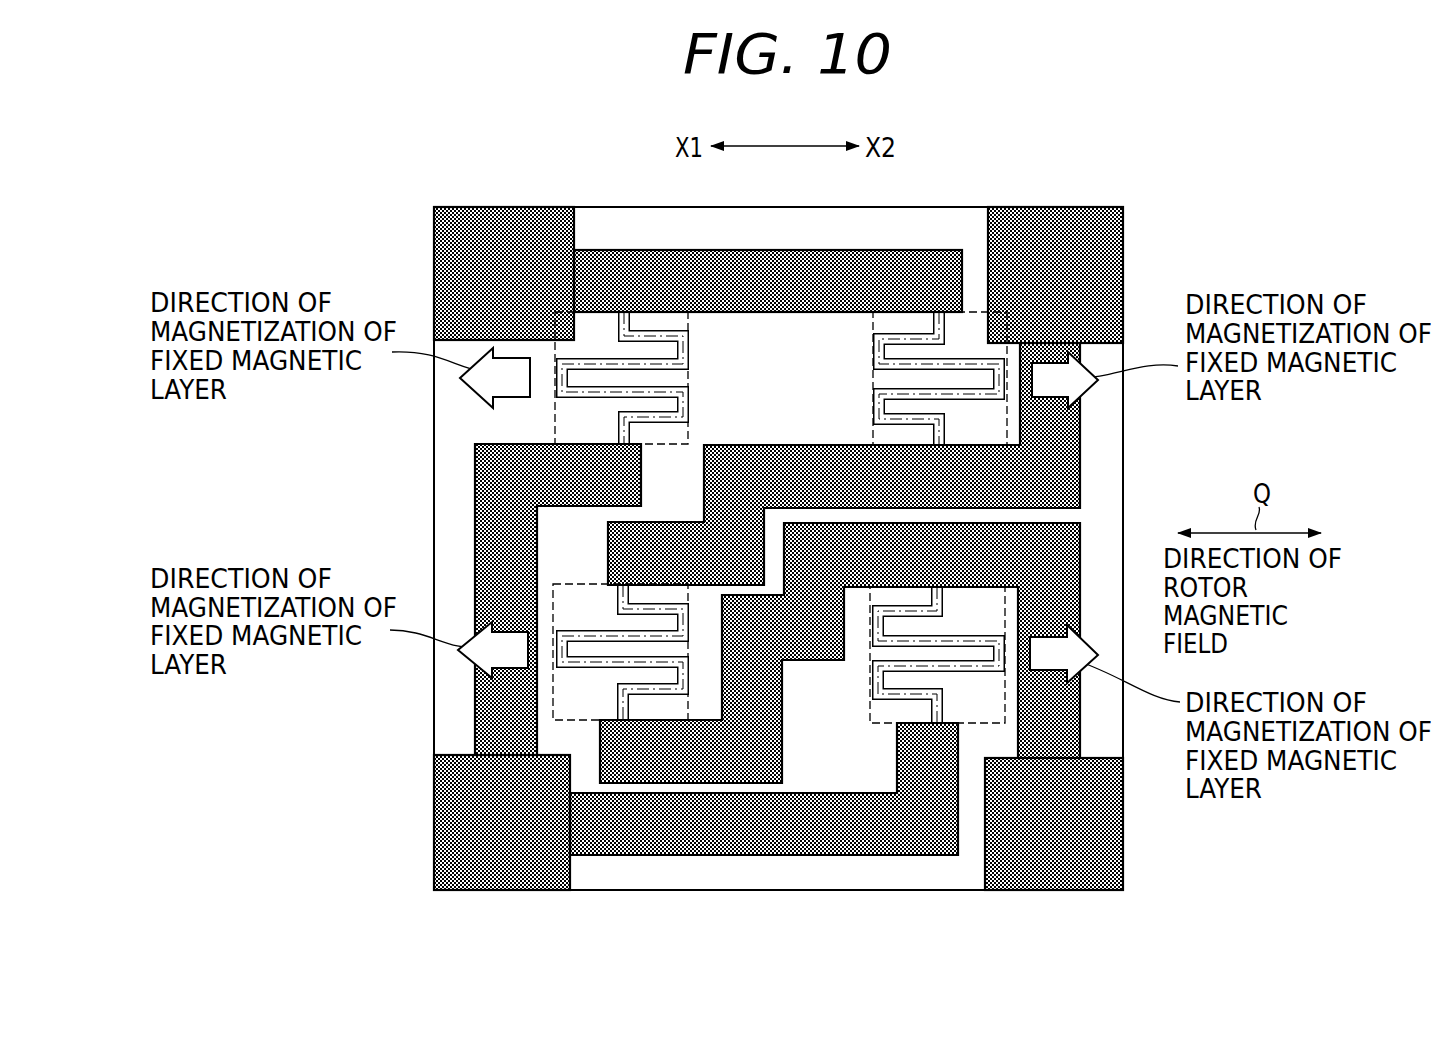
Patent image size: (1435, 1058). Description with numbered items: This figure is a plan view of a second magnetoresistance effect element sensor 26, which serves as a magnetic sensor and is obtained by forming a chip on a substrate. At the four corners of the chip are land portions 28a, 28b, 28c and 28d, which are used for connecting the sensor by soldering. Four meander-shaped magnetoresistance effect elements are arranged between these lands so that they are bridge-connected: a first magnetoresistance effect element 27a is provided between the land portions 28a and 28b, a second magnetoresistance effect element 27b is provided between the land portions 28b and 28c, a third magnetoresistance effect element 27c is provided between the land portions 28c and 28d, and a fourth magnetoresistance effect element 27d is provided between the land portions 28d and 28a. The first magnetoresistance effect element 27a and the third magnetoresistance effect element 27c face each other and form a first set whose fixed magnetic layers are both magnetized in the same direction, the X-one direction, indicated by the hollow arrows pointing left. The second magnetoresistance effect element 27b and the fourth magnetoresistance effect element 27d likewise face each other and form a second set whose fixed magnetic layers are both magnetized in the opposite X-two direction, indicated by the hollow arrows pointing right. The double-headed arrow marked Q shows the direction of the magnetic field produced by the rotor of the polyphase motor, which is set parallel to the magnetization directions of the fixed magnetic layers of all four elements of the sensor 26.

The magnetoresistance effect element sensor 26 is at (1051, 173).
The first magnetoresistance effect element 27a is at (580, 405).
The second magnetoresistance effect element 27b is at (975, 675).
The third magnetoresistance effect element 27c is at (583, 630).
The fourth magnetoresistance effect element 27d is at (980, 406).
The land portion 28a is at (458, 236).
The land portion 28b is at (452, 787).
The land portion 28c is at (1105, 860).
The land portion 28d is at (1105, 243).